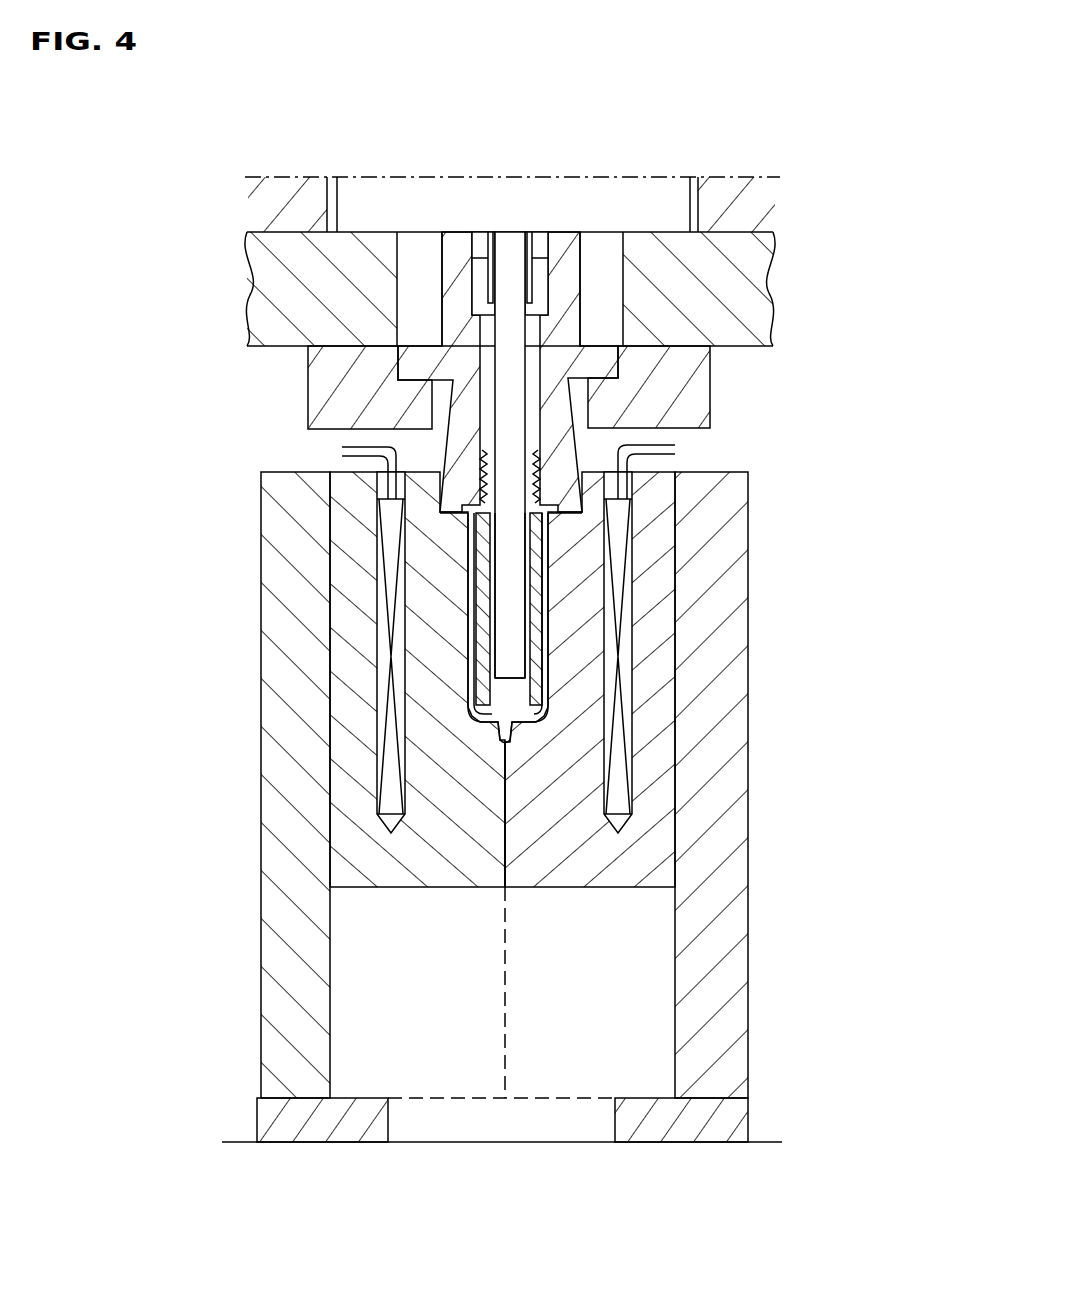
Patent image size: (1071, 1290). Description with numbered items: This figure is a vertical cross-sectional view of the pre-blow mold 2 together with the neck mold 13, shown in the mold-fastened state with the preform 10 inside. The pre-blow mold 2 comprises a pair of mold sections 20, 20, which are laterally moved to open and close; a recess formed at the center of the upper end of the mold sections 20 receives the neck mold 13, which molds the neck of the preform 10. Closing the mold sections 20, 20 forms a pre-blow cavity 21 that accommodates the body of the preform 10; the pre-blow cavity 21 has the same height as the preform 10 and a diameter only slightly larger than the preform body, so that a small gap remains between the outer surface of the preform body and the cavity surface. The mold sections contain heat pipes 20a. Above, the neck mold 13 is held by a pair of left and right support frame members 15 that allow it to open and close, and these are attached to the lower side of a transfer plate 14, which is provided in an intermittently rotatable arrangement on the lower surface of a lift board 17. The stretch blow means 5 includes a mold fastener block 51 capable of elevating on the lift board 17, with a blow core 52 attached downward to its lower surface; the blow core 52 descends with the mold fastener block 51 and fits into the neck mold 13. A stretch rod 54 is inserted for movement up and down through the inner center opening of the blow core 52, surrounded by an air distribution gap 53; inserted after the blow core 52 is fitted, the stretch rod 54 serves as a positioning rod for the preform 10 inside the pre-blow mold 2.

The pre-blow mold 2 is at (252, 757).
The stretch blow means 5 is at (573, 172).
The preform 10 is at (535, 605).
The neck mold 13 is at (590, 496).
The transfer plate 14 is at (705, 284).
The support frame members 15 is at (690, 379).
The lift board 17 is at (285, 197).
The mold sections 20 is at (365, 829).
The heat pipes 20a is at (390, 668).
The pre-blow cavity 21 is at (548, 655).
The mold fastener block 51 is at (665, 203).
The blow core 52 is at (470, 412).
The air distribution gap 53 is at (488, 487).
The stretch rod 54 is at (498, 612).